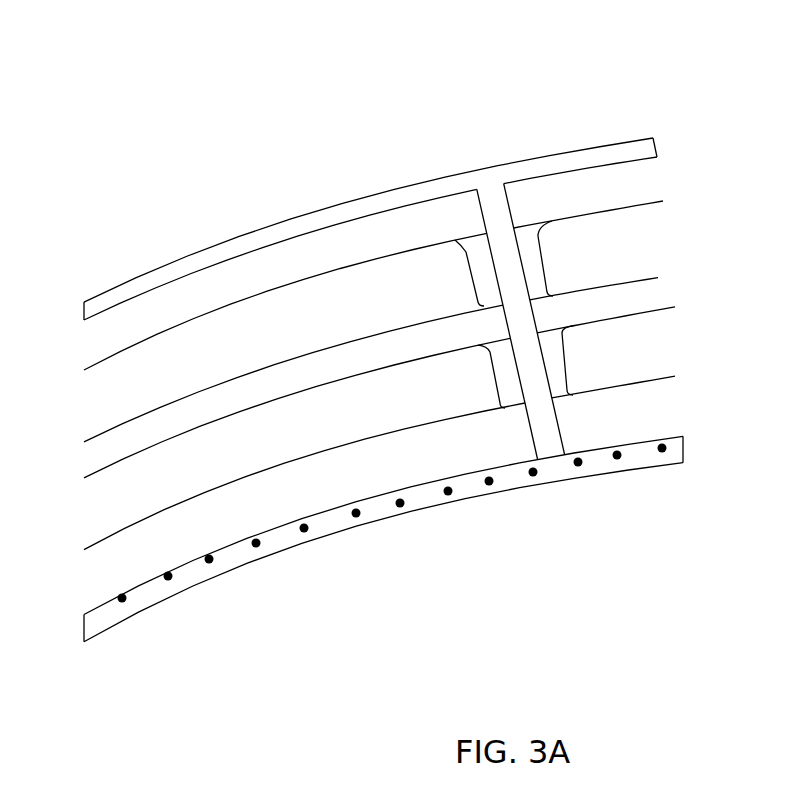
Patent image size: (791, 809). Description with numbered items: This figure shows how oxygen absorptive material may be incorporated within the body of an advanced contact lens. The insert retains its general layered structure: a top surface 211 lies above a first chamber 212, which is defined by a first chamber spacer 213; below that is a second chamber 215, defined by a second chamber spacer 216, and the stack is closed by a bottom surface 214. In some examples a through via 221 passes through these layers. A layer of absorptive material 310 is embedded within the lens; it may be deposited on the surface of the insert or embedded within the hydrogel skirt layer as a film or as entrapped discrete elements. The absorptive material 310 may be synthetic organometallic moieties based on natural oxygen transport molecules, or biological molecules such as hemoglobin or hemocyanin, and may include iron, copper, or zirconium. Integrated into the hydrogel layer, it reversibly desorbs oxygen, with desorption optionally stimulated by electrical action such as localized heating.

The top surface 211 is at (230, 282).
The first chamber 212 is at (322, 322).
The first chamber spacer 213 is at (528, 253).
The bottom surface 214 is at (268, 492).
The second chamber 215 is at (413, 385).
The second chamber spacer 216 is at (503, 380).
The through via 221 is at (538, 420).
The absorptive material 310 is at (356, 513).